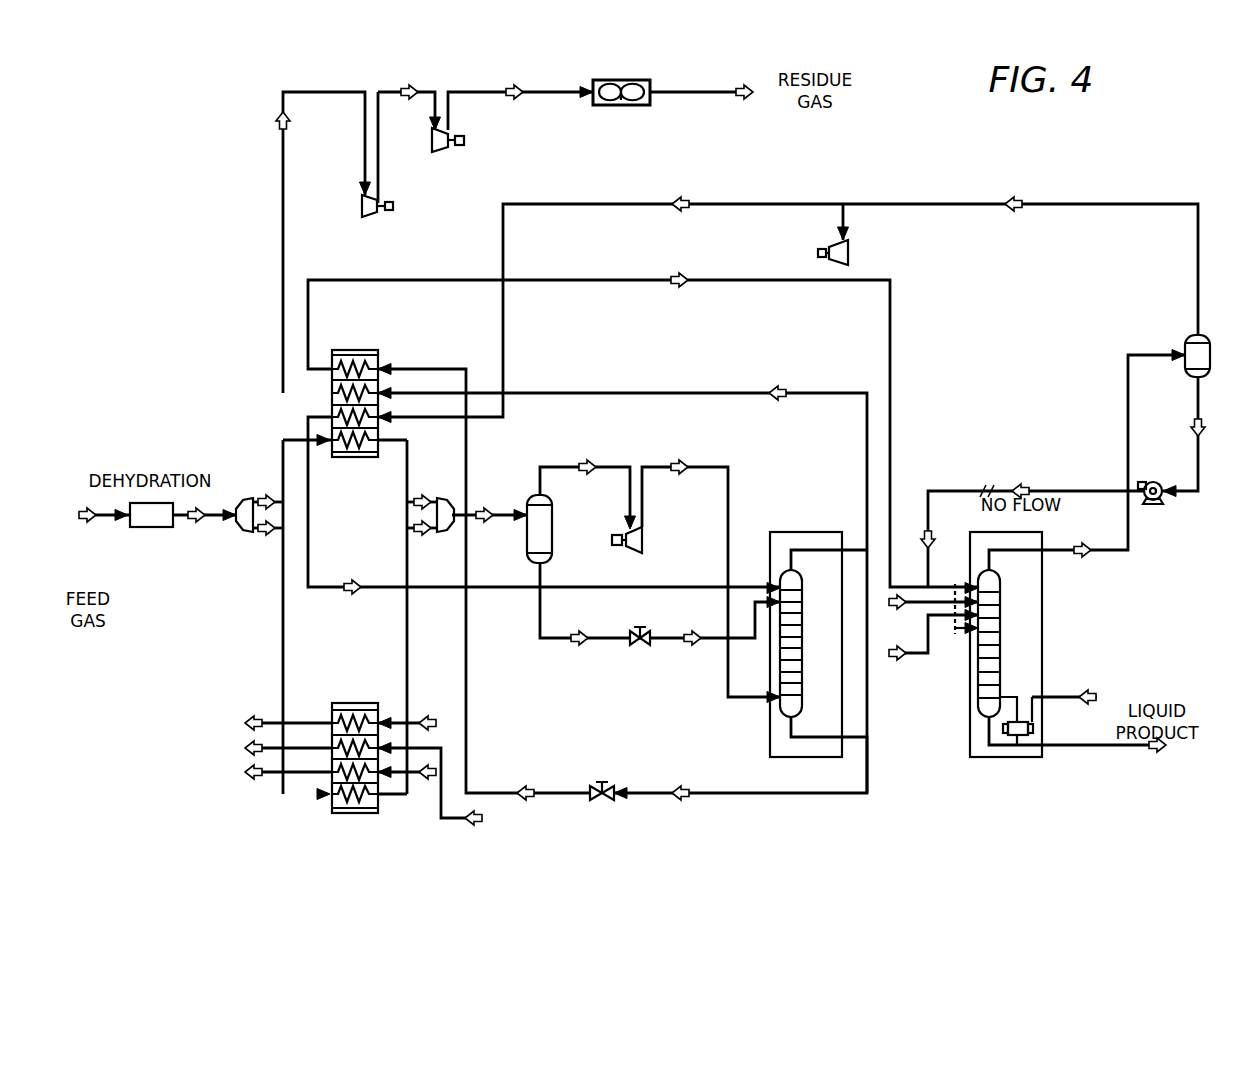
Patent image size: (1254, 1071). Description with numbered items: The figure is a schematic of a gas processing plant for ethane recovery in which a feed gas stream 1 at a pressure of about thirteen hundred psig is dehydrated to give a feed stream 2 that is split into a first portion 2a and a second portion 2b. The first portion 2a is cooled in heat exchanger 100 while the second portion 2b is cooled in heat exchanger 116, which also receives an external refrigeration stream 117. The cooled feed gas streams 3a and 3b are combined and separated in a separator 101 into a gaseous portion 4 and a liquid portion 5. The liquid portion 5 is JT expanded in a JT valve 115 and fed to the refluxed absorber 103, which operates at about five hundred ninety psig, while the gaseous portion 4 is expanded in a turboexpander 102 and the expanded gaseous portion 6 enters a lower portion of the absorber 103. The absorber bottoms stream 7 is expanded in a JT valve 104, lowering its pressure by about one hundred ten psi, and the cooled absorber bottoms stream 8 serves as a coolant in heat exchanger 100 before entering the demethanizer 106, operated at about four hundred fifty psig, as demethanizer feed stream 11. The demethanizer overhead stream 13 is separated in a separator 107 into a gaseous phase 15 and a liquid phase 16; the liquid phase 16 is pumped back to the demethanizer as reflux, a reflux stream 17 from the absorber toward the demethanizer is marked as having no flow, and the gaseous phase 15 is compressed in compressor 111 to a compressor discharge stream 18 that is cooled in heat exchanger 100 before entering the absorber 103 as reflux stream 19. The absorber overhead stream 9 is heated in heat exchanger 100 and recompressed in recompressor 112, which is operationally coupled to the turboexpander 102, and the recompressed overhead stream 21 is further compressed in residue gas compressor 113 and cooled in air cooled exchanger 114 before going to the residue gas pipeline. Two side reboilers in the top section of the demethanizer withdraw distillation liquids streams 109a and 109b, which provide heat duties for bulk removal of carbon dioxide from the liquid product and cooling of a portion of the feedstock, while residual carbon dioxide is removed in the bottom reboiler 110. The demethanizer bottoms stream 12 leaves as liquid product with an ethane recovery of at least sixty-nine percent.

The feed gas stream 1 is at (88, 523).
The feed stream 2 is at (197, 523).
The first portion 2a is at (266, 495).
The second portion 2b is at (266, 536).
The cooled feed gas stream 3a is at (420, 495).
The cooled feed gas stream 3b is at (420, 536).
The gaseous portion 4 is at (586, 460).
The liquid portion 5 is at (578, 648).
The expanded gaseous portion 6 is at (678, 460).
The absorber bottoms stream 7 is at (679, 785).
The cooled absorber bottoms stream 8 is at (523, 785).
The absorber overhead stream 9 is at (786, 398).
The demethanizer feed stream 11 is at (676, 272).
The demethanizer bottoms stream 12 is at (1160, 754).
The demethanizer overhead stream 13 is at (1080, 560).
The gaseous phase 15 is at (1013, 198).
The liquid phase 16 is at (1195, 426).
The reflux stream 17 is at (1023, 485).
The compressor discharge stream 18 is at (681, 198).
The reflux stream 19 is at (352, 596).
The recompressed overhead stream 21 is at (408, 88).
The heat exchanger 100 is at (340, 457).
The separator 101 is at (553, 530).
The turboexpander 102 is at (644, 545).
The absorber 103 is at (768, 732).
The JT valve 104 is at (602, 780).
The demethanizer 106 is at (1005, 758).
The separator 107 is at (1183, 345).
The distillation liquids stream 109a is at (893, 602).
The distillation liquids stream 109b is at (893, 660).
The bottom reboiler 110 is at (1086, 690).
The compressor 111 is at (850, 252).
The recompressor 112 is at (370, 217).
The residue gas compressor 113 is at (442, 152).
The air cooled exchanger 114 is at (620, 80).
The JT valve 115 is at (642, 650).
The heat exchanger 116 is at (360, 813).
The refrigerant stream 117 is at (479, 826).